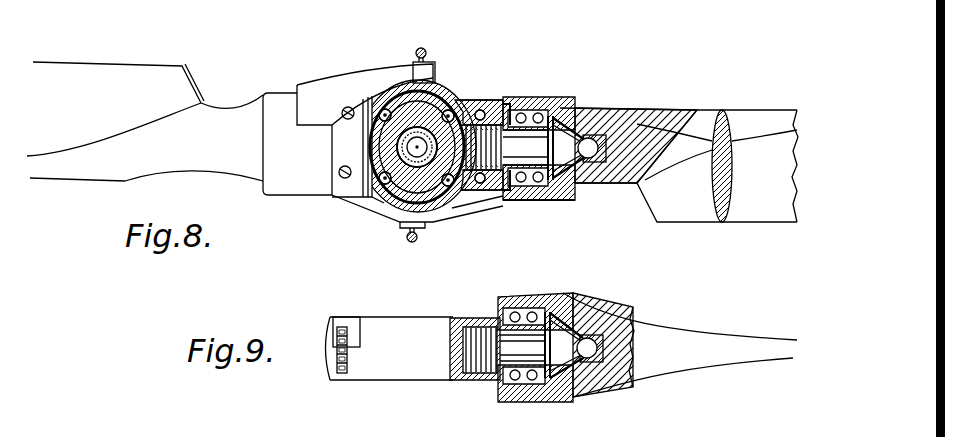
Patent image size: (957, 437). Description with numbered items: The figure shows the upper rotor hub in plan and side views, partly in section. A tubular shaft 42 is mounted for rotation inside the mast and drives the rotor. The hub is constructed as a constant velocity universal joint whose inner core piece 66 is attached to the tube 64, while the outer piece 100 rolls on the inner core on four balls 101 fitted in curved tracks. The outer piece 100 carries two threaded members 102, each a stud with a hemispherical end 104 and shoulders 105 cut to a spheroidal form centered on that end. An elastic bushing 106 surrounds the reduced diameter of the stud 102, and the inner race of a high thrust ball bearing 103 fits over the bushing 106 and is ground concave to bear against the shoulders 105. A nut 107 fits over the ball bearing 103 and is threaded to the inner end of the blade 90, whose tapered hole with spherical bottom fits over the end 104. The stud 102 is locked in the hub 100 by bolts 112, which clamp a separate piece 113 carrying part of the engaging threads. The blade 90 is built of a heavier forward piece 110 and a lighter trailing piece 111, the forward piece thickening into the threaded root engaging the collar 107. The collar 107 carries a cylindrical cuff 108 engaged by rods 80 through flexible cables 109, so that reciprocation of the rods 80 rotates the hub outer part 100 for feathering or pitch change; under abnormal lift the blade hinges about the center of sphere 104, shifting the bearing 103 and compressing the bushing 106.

In FIG. 8, the tubular shaft 42 is at (415, 143).
In FIG. 8, the tube 64 is at (424, 138).
In FIG. 8, the inner core piece 66 is at (446, 96).
In FIG. 8, the rod 80 is at (412, 243).
In FIG. 8, the blade 90 is at (647, 118).
In FIG. 9, the blade 90 is at (594, 316).
In FIG. 8, the outer piece 100 is at (505, 93).
In FIG. 9, the outer piece 100 is at (424, 316).
In FIG. 8, the balls 101 is at (448, 112).
In FIG. 9, the threaded member 102 is at (487, 328).
In FIG. 8, the ball bearing 103 is at (497, 112).
In FIG. 8, the hemispherical end 104 is at (592, 148).
In FIG. 9, the hemispherical end 104 is at (621, 333).
In FIG. 8, the shoulders 105 is at (566, 98).
In FIG. 8, the bushing 106 is at (537, 201).
In FIG. 8, the nut 107 is at (578, 100).
In FIG. 9, the nut 107 is at (553, 300).
In FIG. 8, the cuff 108 is at (345, 78).
In FIG. 8, the flexible cables 109 is at (403, 227).
In FIG. 8, the forward piece 110 is at (722, 110).
In FIG. 8, the trailing piece 111 is at (728, 172).
In FIG. 8, the bolts 112 is at (338, 187).
In FIG. 9, the bolts 112 is at (334, 316).
In FIG. 8, the piece 113 is at (355, 196).
In FIG. 9, the piece 113 is at (325, 322).